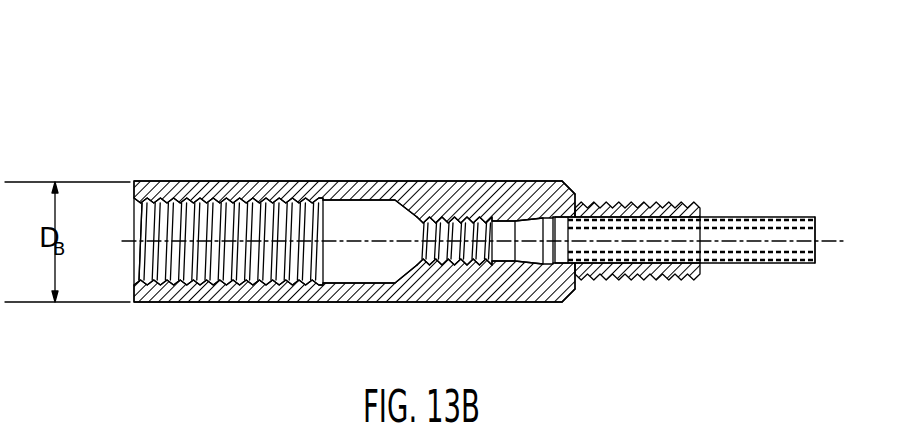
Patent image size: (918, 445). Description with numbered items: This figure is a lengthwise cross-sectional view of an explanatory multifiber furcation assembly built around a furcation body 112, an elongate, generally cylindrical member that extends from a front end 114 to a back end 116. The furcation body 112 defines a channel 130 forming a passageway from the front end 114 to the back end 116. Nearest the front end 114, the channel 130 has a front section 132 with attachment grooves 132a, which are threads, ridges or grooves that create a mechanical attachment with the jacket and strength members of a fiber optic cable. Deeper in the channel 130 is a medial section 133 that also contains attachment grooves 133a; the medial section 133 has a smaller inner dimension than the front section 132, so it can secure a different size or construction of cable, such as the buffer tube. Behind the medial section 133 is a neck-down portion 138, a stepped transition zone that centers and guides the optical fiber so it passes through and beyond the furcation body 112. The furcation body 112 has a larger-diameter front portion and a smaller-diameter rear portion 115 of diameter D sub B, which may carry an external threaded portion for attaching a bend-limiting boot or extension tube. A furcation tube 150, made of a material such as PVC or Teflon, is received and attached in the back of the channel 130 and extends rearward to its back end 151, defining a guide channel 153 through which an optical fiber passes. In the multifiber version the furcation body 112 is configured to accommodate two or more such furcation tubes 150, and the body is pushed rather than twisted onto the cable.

The furcation body 112 is at (437, 137).
The front end 114 is at (135, 191).
The rear portion 115 is at (560, 162).
The back end 116 is at (703, 213).
The channel 130 is at (367, 230).
The front section 132 is at (402, 307).
The attachment grooves 132a is at (145, 247).
The medial section 133 is at (517, 307).
The attachment grooves 133a is at (577, 176).
The neck-down portion 138 is at (563, 307).
The furcation tube 150 is at (732, 215).
The back end 151 is at (817, 216).
The guide channel 153 is at (777, 216).